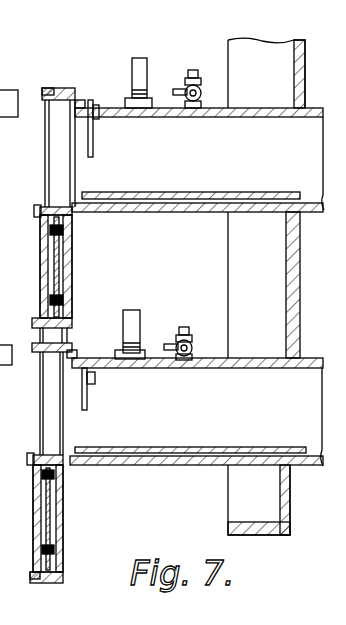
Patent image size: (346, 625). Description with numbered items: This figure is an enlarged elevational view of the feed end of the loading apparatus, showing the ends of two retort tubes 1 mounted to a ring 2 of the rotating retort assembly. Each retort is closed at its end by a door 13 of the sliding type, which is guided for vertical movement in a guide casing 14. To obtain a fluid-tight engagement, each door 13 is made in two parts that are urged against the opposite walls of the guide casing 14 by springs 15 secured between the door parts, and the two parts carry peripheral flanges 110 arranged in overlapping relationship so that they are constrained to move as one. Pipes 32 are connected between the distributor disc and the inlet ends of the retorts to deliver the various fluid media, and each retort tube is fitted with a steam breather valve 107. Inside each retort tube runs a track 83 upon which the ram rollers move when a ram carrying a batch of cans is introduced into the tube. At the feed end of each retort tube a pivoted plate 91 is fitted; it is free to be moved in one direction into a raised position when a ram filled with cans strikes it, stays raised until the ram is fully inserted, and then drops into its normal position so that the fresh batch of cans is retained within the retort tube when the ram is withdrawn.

The plate 1 is at (312, 110).
The ring 2 is at (293, 272).
The door 13 is at (44, 258).
The guide casing 14 is at (68, 92).
The spring 15 is at (63, 264).
The pipe 32 is at (143, 62).
The track 83 is at (182, 192).
The pivoted plate 91 is at (87, 401).
The steam breather valve 107 is at (194, 70).
The peripheral flange 110 is at (58, 208).